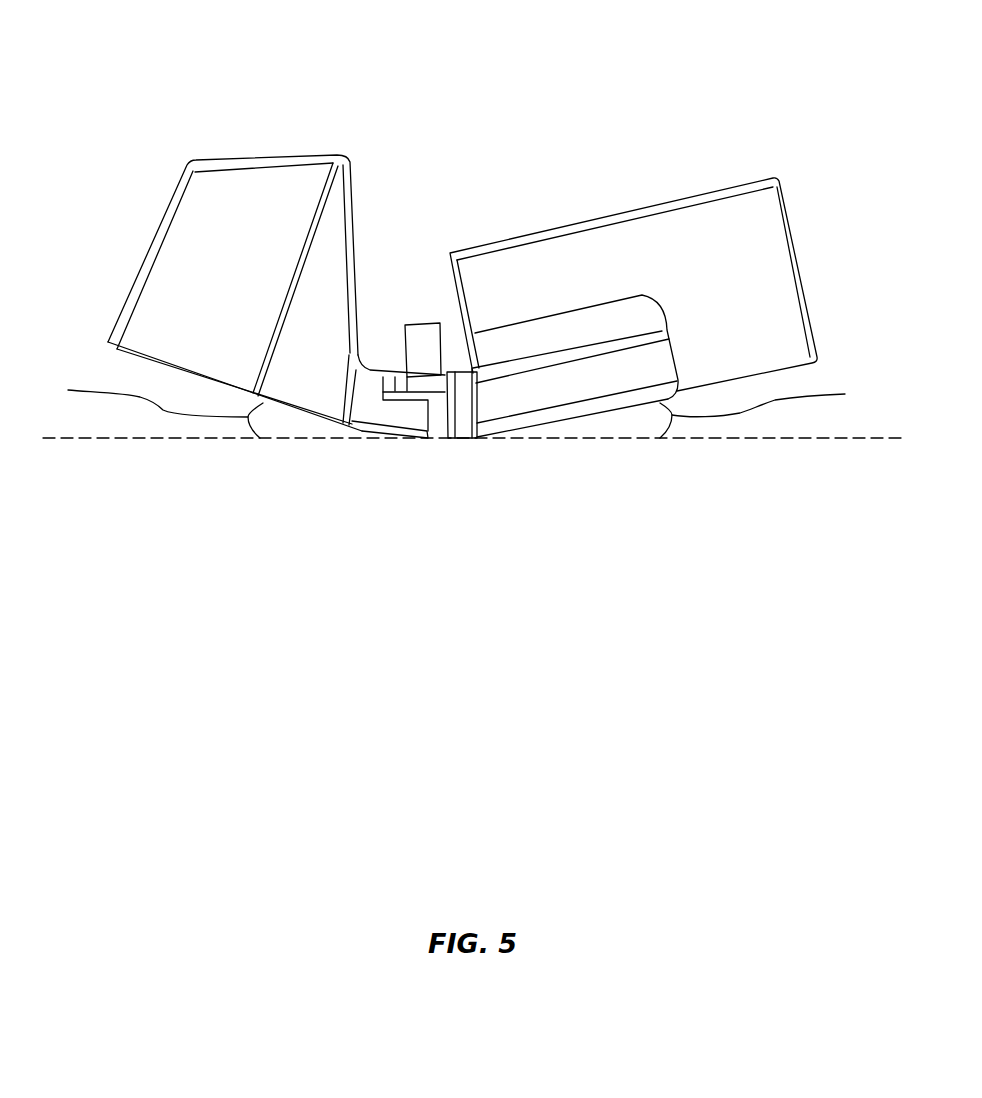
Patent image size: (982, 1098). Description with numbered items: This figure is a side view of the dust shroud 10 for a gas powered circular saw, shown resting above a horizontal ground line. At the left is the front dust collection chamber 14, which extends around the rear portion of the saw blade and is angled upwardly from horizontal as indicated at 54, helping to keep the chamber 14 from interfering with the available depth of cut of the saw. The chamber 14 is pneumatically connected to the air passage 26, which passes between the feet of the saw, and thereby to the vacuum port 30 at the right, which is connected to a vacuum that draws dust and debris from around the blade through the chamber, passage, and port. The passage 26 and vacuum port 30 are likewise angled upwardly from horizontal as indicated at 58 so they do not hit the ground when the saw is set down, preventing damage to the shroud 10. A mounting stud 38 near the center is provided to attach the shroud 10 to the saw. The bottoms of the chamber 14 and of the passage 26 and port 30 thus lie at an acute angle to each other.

The dust shroud 10 is at (462, 223).
The dust collection chamber 14 is at (249, 182).
The air passage 26 is at (452, 372).
The vacuum port 30 is at (727, 160).
The mounting stud 38 is at (418, 337).
The upward angle of dust collection chamber 54 is at (150, 410).
The upward angle of passage and vacuum port 58 is at (770, 411).